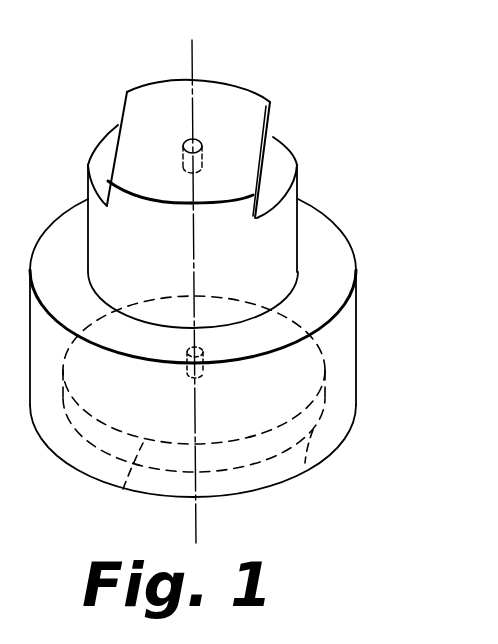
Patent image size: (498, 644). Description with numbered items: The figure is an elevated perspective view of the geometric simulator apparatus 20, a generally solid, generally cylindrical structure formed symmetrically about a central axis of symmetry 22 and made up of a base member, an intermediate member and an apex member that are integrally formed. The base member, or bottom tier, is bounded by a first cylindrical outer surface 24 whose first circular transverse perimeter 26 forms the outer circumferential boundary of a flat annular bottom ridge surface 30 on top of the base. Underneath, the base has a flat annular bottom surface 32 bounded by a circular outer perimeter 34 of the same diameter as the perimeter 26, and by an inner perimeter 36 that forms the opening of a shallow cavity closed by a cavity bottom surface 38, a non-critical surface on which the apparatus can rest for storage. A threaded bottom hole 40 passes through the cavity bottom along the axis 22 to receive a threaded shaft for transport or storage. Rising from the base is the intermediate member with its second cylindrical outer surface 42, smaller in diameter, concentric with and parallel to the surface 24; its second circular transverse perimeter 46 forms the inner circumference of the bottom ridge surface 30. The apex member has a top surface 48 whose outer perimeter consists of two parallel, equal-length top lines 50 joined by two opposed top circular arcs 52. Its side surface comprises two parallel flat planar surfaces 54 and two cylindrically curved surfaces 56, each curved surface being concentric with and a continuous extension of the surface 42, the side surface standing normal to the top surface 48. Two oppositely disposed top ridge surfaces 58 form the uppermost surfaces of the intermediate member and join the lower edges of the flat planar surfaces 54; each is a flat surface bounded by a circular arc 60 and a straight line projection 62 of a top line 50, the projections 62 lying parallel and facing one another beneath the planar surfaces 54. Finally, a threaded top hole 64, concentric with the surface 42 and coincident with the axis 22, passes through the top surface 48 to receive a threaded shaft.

The geometric simulator apparatus 20 is at (320, 157).
The central axis of symmetry 22 is at (198, 68).
The first cylindrical outer surface 24 is at (357, 337).
The first circular transverse perimeter 26 is at (356, 250).
The bottom ridge surface 30 is at (347, 267).
The bottom surface 32 is at (307, 465).
The circular outer perimeter 34 is at (272, 489).
The inner perimeter 36 is at (312, 430).
The cavity bottom surface 38 is at (124, 486).
The threaded bottom hole 40 is at (207, 370).
The second cylindrical outer surface 42 is at (300, 207).
The second circular transverse perimeter 46 is at (113, 310).
The top surface 48 is at (240, 93).
The top lines 50 is at (123, 111).
The top circular arcs 52 is at (160, 80).
The flat planar surfaces 54 is at (262, 160).
The cylindrically curved surfaces 56 is at (240, 200).
The top ridge surfaces 58 is at (88, 170).
The circular arc 60 is at (107, 130).
The straight line projection 62 is at (282, 140).
The threaded top hole 64 is at (200, 143).